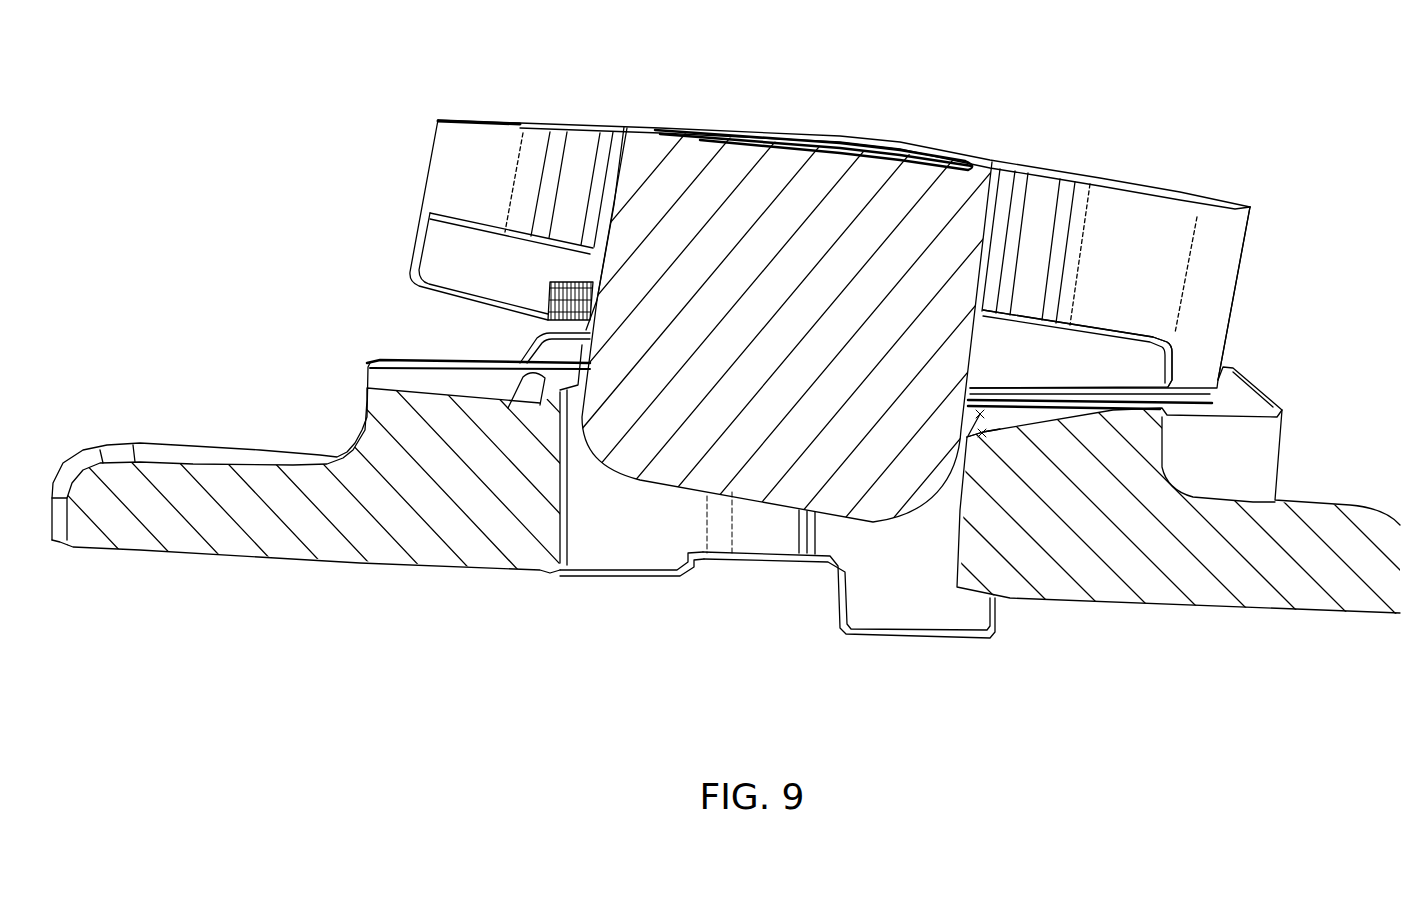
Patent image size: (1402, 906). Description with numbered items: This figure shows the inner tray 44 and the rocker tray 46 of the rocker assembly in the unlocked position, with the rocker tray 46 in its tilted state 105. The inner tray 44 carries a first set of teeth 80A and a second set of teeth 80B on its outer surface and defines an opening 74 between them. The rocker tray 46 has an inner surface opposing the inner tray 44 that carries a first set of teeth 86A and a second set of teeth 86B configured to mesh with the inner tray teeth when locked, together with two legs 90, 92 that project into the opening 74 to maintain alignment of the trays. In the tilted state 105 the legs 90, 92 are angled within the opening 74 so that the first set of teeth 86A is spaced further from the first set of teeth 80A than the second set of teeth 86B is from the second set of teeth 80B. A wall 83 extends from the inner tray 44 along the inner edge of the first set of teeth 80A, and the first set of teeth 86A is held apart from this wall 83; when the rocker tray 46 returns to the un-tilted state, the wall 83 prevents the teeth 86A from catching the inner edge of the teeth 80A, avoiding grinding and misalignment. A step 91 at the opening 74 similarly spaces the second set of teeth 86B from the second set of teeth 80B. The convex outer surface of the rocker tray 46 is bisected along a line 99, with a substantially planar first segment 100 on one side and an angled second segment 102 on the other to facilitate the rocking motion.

The inner tray 44 is at (387, 347).
The rocker tray 46 is at (1196, 181).
The opening 74 is at (612, 530).
The first set of teeth 80A is at (498, 350).
The second set of teeth 80B is at (1060, 400).
The wall 83 is at (533, 382).
The first set of teeth 86A is at (447, 300).
The second set of teeth 86B is at (1108, 422).
The leg 90 is at (982, 414).
The step 91 is at (985, 434).
The leg 92 is at (718, 470).
The line 99 is at (866, 136).
The first segment 100 is at (1117, 187).
The second segment 102 is at (535, 120).
The tilted state 105 is at (627, 104).